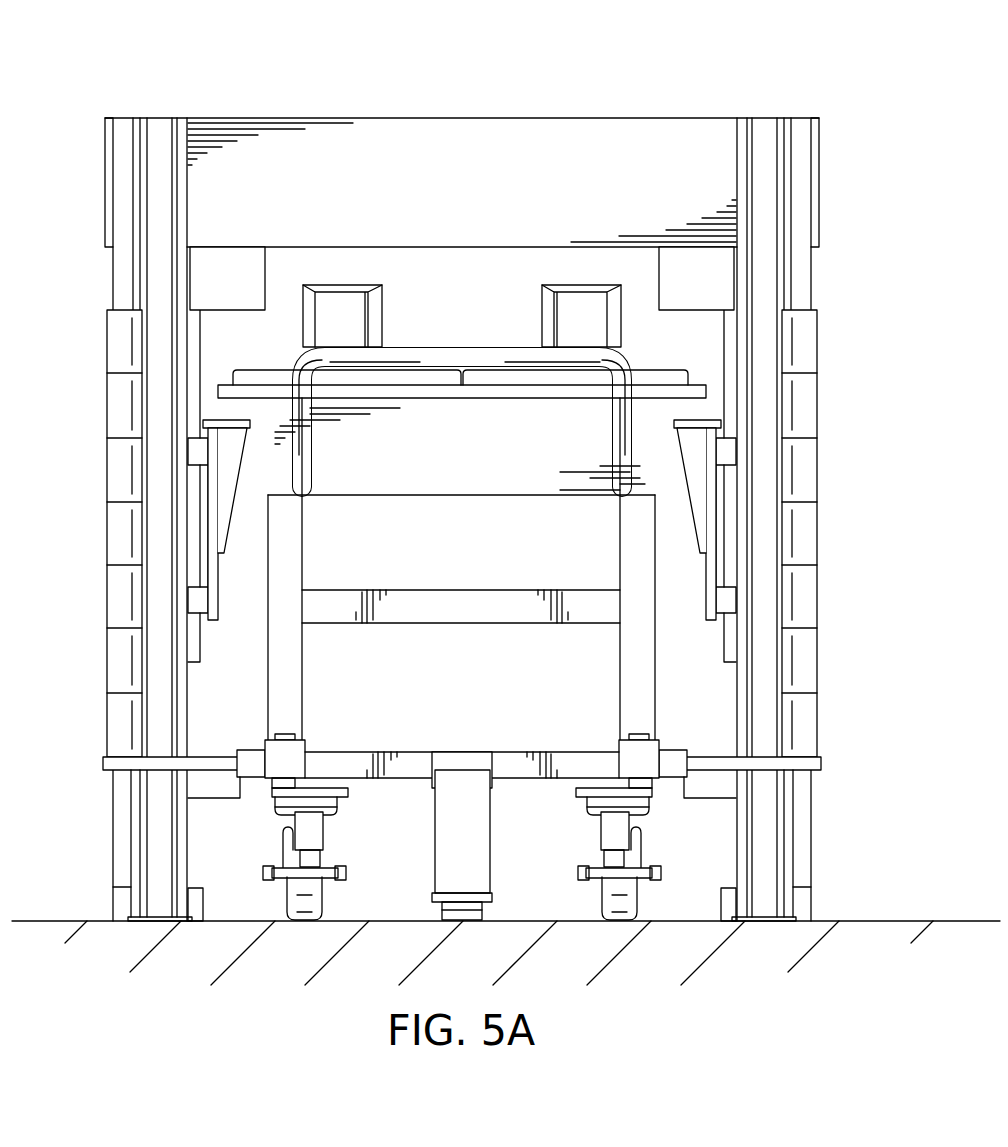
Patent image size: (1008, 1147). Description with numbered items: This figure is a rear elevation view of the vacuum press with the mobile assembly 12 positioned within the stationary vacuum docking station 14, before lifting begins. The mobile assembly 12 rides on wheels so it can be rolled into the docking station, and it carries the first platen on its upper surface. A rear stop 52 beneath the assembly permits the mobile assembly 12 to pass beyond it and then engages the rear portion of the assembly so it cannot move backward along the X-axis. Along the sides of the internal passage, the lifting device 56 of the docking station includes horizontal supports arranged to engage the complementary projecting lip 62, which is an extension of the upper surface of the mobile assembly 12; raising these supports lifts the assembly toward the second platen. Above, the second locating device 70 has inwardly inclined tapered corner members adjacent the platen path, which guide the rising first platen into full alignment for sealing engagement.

The mobile assembly 12 is at (525, 803).
The vacuum docking station 14 is at (507, 108).
The rear stop 52 is at (433, 840).
The lifting device 56 is at (223, 627).
The projecting lip 62 is at (227, 402).
The second locating device 70 is at (223, 79).